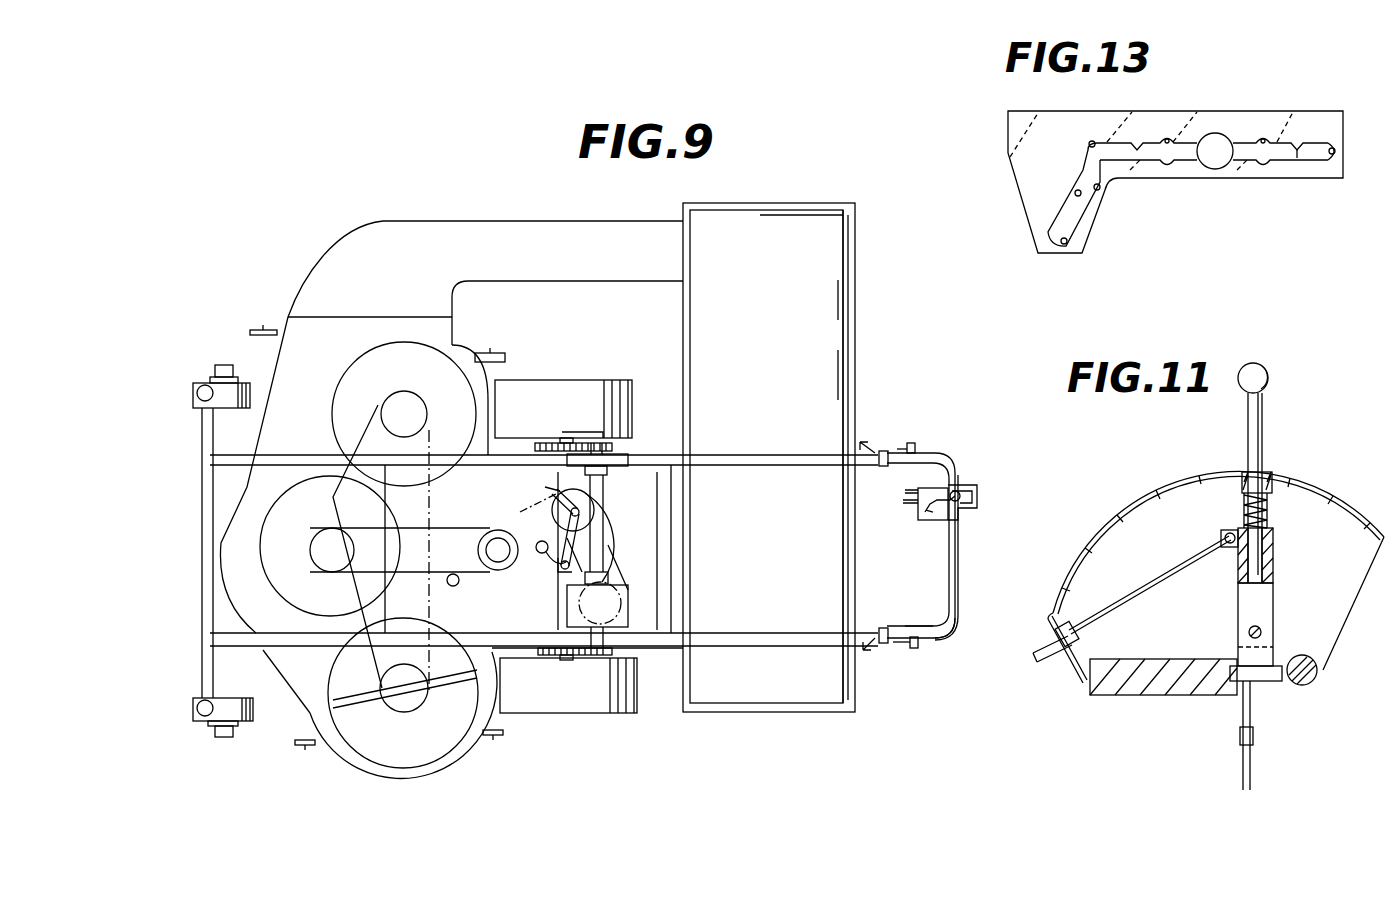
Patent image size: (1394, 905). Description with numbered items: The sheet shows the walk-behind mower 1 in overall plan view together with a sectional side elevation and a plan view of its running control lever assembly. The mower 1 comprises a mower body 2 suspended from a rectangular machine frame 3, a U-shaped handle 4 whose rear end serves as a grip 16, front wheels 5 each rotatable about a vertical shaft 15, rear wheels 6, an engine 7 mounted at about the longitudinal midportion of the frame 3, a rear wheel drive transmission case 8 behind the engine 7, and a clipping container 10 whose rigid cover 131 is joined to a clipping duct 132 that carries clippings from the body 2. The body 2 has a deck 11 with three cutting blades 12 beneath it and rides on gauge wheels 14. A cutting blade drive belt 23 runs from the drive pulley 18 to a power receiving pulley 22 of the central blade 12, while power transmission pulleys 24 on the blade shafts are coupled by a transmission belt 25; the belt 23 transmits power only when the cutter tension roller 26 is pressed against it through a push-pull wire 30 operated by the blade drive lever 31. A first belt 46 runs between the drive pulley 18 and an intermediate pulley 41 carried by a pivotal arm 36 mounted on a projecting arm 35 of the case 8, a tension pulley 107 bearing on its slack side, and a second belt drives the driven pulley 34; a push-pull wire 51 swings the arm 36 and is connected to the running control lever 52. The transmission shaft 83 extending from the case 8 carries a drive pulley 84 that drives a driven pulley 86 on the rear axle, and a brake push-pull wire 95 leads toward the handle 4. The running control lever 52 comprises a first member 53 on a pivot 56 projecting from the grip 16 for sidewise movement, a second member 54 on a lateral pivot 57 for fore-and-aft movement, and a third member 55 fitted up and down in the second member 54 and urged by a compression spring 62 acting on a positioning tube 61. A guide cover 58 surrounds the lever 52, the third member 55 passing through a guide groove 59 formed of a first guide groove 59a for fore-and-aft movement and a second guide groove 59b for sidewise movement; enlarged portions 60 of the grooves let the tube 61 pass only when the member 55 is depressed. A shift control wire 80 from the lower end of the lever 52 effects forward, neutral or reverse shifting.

In FIG. 9, the mower 1 is at (197, 466).
In FIG. 9, the mower body 2 is at (310, 712).
In FIG. 9, the machine frame 3 is at (478, 466).
In FIG. 9, the handle 4 is at (920, 628).
In FIG. 11, the handle 4 is at (1312, 678).
In FIG. 9, the front wheels 5 is at (238, 392).
In FIG. 9, the rear wheels 6 is at (632, 408).
In FIG. 9, the engine 7 is at (527, 460).
In FIG. 9, the rear wheel drive transmission case 8 is at (628, 604).
In FIG. 9, the clipping container 10 is at (781, 722).
In FIG. 9, the deck 11 is at (363, 772).
In FIG. 9, the cutting blades 12 is at (368, 345).
In FIG. 9, the gauge wheels 14 is at (263, 325).
In FIG. 9, the vertical shaft 15 is at (204, 385).
In FIG. 9, the grip 16 is at (960, 604).
In FIG. 11, the grip 16 is at (1325, 657).
In FIG. 9, the drive pulley 18 is at (480, 550).
In FIG. 9, the power receiving pulley 22 is at (338, 540).
In FIG. 9, the cutting blade drive belt 23 is at (447, 527).
In FIG. 9, the power transmission pulleys 24 is at (420, 414).
In FIG. 9, the transmission belt 25 is at (358, 445).
In FIG. 9, the cutter tension roller 26 is at (453, 587).
In FIG. 9, the push-pull wire 30 is at (905, 448).
In FIG. 9, the blade drive lever 31 is at (956, 636).
In FIG. 9, the driven pulley 34 is at (627, 583).
In FIG. 9, the projecting arm 35 is at (607, 548).
In FIG. 9, the pivotal arm 36 is at (560, 568).
In FIG. 9, the intermediate pulley 41 is at (613, 518).
In FIG. 9, the first belt 46 is at (518, 520).
In FIG. 9, the push-pull wire 51 is at (904, 491).
In FIG. 11, the push-pull wire 51 is at (1161, 585).
In FIG. 9, the running control lever 52 is at (958, 490).
In FIG. 13, the running control lever 52 is at (1217, 169).
In FIG. 11, the running control lever 52 is at (1263, 440).
In FIG. 11, the first member 53 is at (1250, 604).
In FIG. 11, the second member 54 is at (1275, 562).
In FIG. 11, the third member 55 is at (1244, 506).
In FIG. 11, the pivot 56 is at (1260, 680).
In FIG. 11, the lateral pivot 57 is at (1262, 631).
In FIG. 9, the guide cover 58 is at (925, 508).
In FIG. 13, the guide cover 58 is at (1332, 180).
In FIG. 11, the guide cover 58 is at (1355, 505).
In FIG. 9, the guide groove 59 is at (934, 512).
In FIG. 13, the guide groove 59 is at (1298, 146).
In FIG. 13, the first guide groove 59a is at (1137, 146).
In FIG. 13, the second guide groove 59b is at (1100, 189).
In FIG. 13, the enlarged portions 60 is at (1092, 141).
In FIG. 11, the enlarged portions 60 is at (1210, 484).
In FIG. 11, the positioning tube 61 is at (1270, 478).
In FIG. 11, the compression spring 62 is at (1270, 508).
In FIG. 9, the shift control wire 80 is at (903, 502).
In FIG. 11, the shift control wire 80 is at (1243, 755).
In FIG. 9, the transmission shaft 83 is at (612, 492).
In FIG. 9, the drive pulley 84 is at (600, 443).
In FIG. 9, the driven pulley 86 is at (560, 443).
In FIG. 9, the brake push-pull wire 95 is at (870, 452).
In FIG. 9, the tension pulley 107 is at (538, 553).
In FIG. 9, the rigid cover 131 is at (826, 268).
In FIG. 9, the clipping duct 132 is at (612, 238).